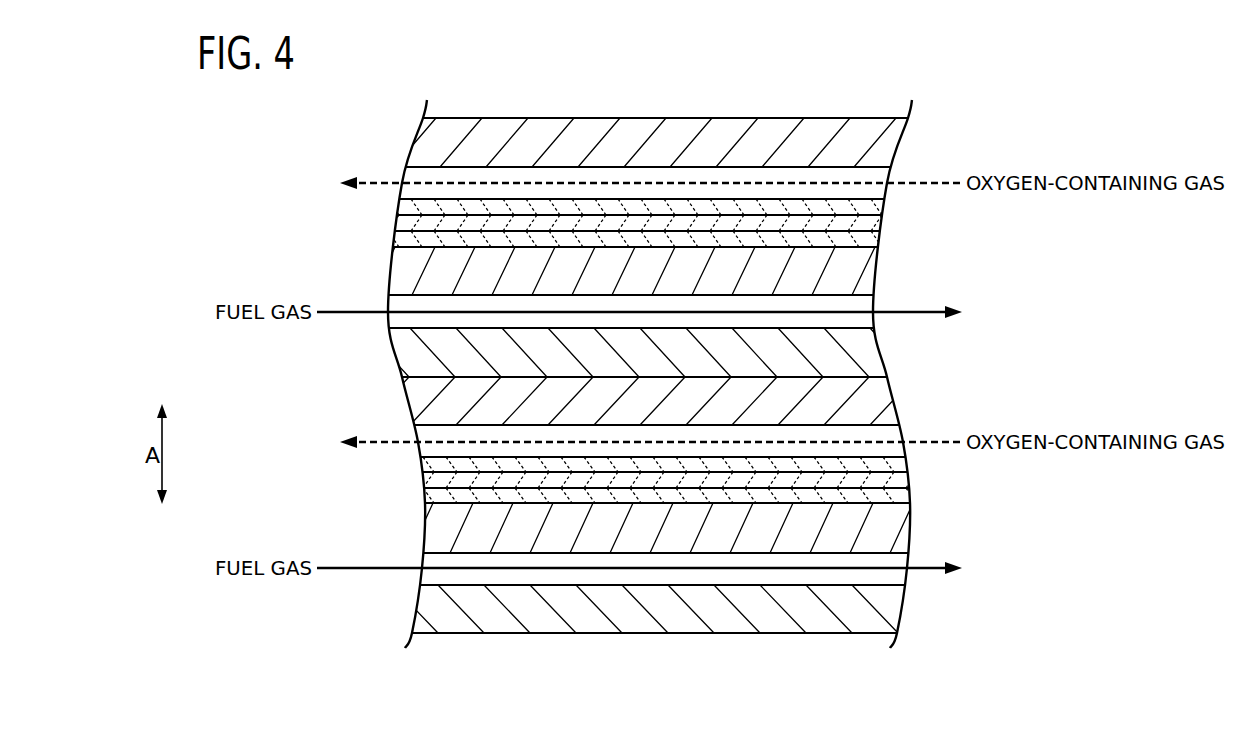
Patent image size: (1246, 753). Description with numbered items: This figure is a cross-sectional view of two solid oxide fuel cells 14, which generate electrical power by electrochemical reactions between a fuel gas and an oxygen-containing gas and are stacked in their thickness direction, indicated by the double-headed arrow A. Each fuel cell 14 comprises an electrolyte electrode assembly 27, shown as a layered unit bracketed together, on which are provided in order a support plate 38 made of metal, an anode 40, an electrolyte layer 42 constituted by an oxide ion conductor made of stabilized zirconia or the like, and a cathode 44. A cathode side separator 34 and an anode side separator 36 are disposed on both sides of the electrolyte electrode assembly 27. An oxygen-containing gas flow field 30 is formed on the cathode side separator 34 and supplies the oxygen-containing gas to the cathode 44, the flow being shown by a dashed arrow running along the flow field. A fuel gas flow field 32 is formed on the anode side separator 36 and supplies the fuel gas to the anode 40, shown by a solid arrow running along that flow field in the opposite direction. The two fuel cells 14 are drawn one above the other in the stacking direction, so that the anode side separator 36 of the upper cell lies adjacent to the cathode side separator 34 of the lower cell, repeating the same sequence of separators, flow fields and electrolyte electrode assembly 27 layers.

The solid oxide fuel cell 14 is at (920, 118).
The electrolyte electrode assembly 27 is at (604, 377).
The oxygen-containing gas flow field 30 is at (415, 176).
The fuel gas flow field 32 is at (413, 317).
The cathode side separator 34 is at (437, 137).
The anode side separator 36 is at (420, 358).
The support plate 38 is at (619, 402).
The anode 40 is at (410, 240).
The electrolyte layer 42 is at (410, 220).
The cathode 44 is at (410, 207).